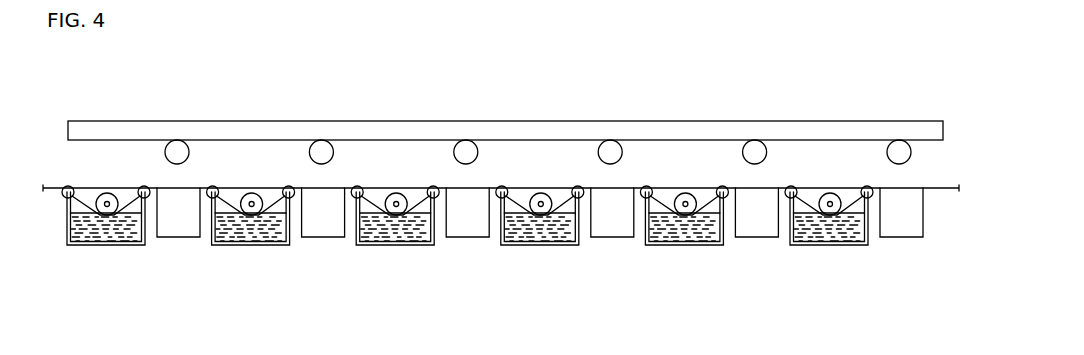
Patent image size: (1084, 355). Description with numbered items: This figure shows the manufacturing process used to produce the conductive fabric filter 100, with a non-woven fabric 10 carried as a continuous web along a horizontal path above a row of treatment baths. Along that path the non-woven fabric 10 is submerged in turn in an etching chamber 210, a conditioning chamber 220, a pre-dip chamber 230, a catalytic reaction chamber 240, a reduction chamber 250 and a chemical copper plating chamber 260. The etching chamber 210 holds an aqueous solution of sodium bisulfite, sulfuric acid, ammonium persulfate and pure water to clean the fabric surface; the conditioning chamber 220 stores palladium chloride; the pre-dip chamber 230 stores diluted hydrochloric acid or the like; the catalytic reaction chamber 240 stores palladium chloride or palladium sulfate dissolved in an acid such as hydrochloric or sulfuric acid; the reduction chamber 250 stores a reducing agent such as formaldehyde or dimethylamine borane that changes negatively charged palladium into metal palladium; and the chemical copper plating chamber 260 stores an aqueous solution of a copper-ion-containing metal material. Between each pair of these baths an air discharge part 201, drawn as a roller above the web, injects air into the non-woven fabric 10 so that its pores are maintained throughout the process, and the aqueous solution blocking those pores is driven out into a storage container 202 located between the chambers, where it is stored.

The non-woven fabric 10 is at (62, 186).
The conductive fabric filter 100 is at (919, 187).
The air discharge part 201 is at (176, 150).
The storage container 202 is at (178, 232).
The etching chamber 210 is at (106, 250).
The conditioning chamber 220 is at (251, 250).
The pre-dip chamber 230 is at (395, 250).
The catalytic reaction chamber 240 is at (540, 250).
The reduction chamber 250 is at (684, 250).
The chemical copper plating chamber 260 is at (829, 250).